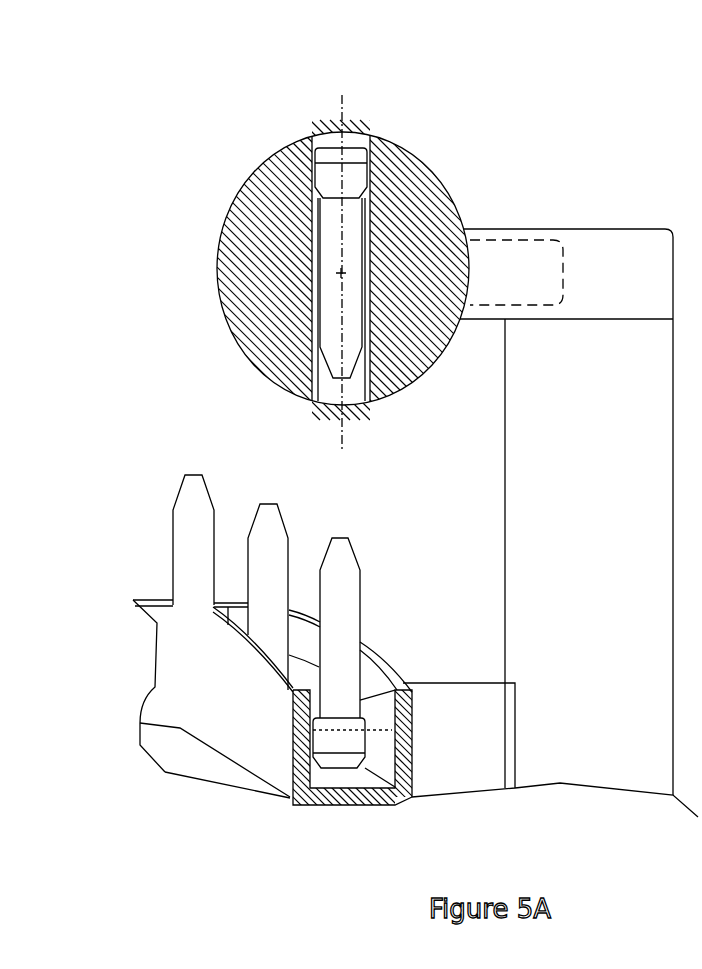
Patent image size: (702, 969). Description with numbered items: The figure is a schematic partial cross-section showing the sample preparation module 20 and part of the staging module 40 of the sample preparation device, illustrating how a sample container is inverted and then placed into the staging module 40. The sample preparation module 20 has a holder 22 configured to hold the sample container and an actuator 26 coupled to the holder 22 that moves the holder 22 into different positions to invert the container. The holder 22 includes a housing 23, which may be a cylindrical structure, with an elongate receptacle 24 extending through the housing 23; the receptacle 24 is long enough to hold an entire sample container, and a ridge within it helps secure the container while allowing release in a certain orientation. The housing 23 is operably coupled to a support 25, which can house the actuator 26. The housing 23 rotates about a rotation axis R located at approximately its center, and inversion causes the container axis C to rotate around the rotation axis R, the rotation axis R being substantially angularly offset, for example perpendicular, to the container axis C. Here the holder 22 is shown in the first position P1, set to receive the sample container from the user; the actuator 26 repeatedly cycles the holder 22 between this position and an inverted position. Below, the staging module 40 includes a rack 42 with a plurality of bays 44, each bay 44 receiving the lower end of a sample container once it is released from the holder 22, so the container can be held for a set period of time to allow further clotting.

The sample preparation module 20 is at (550, 436).
The holder 22 is at (207, 260).
The housing 23 is at (230, 330).
The elongate receptacle 24 is at (310, 133).
The support 25 is at (609, 401).
The actuator 26 is at (513, 273).
The staging module 40 is at (306, 677).
The rack 42 is at (265, 757).
The bay 44 is at (323, 757).
The rotation axis R is at (383, 353).
The container axis C is at (351, 275).
The pivot direction I is at (415, 43).
The first position P1 is at (148, 176).